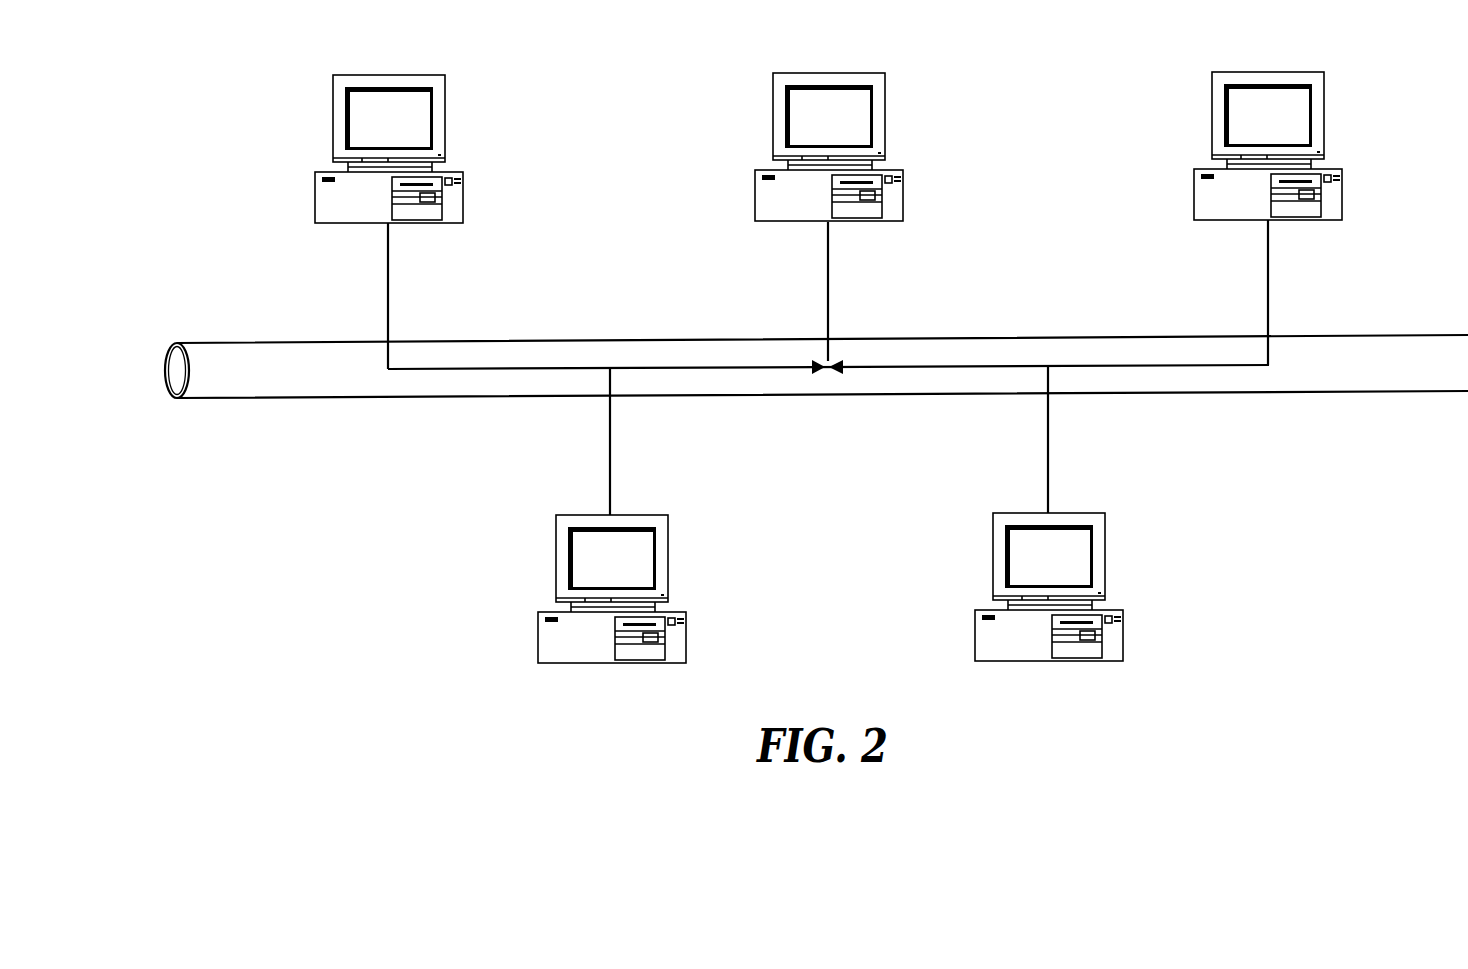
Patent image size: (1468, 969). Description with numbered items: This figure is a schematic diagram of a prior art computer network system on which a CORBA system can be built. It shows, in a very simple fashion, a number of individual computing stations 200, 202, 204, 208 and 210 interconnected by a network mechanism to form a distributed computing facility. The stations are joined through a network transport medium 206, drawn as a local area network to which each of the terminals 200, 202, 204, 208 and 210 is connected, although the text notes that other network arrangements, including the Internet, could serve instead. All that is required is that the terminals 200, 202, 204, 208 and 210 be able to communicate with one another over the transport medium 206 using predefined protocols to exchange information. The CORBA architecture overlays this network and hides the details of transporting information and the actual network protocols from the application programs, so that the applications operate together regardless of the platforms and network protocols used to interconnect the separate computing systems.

The station 200 is at (405, 112).
The station 202 is at (837, 108).
The station 204 is at (1287, 105).
The network 206 is at (535, 367).
The station 208 is at (627, 552).
The station 210 is at (1067, 547).